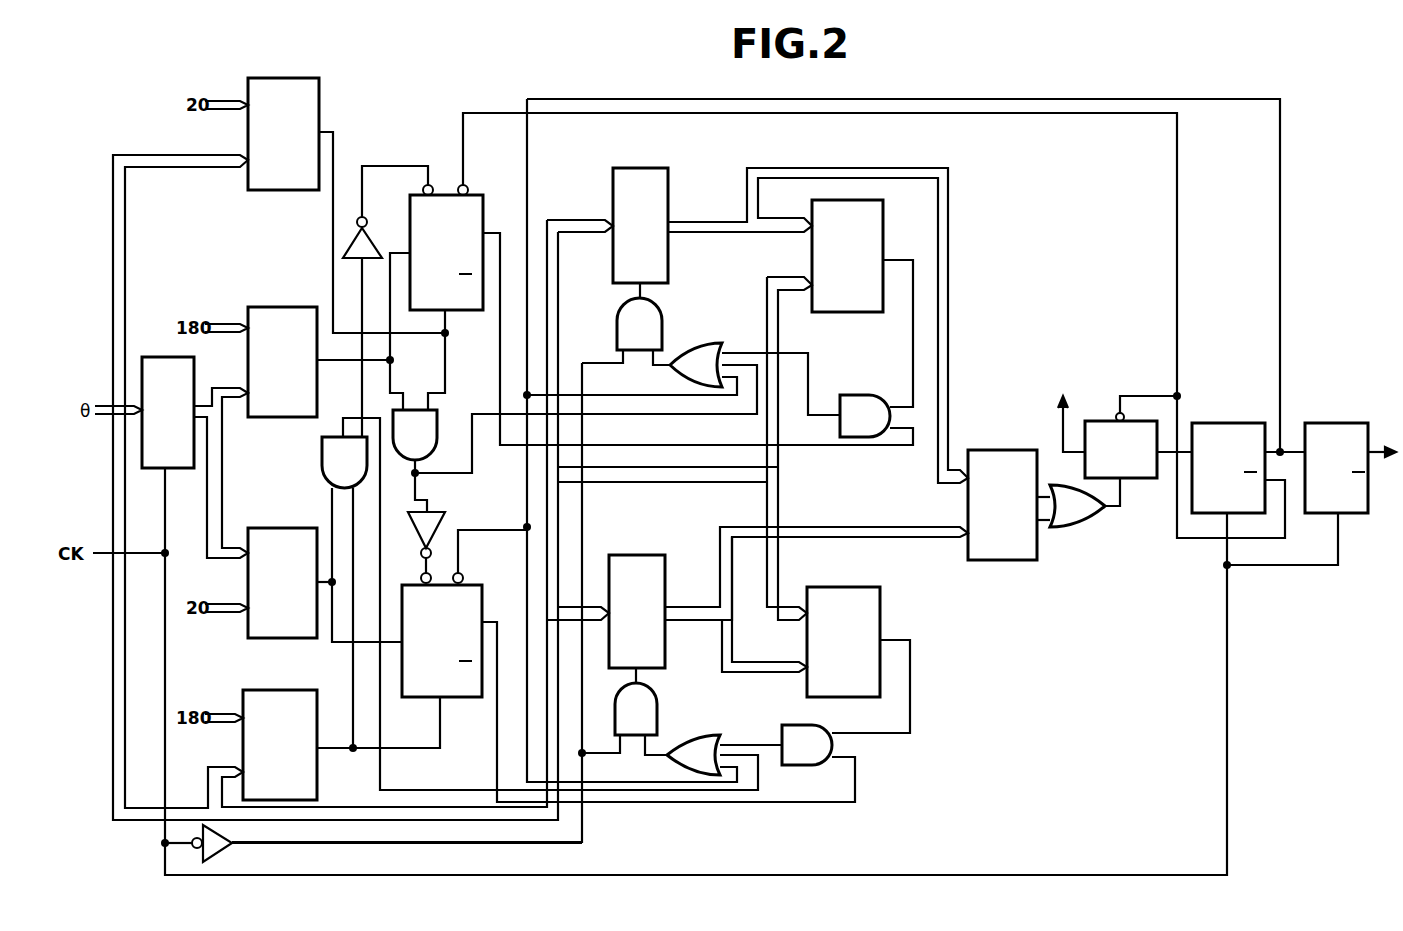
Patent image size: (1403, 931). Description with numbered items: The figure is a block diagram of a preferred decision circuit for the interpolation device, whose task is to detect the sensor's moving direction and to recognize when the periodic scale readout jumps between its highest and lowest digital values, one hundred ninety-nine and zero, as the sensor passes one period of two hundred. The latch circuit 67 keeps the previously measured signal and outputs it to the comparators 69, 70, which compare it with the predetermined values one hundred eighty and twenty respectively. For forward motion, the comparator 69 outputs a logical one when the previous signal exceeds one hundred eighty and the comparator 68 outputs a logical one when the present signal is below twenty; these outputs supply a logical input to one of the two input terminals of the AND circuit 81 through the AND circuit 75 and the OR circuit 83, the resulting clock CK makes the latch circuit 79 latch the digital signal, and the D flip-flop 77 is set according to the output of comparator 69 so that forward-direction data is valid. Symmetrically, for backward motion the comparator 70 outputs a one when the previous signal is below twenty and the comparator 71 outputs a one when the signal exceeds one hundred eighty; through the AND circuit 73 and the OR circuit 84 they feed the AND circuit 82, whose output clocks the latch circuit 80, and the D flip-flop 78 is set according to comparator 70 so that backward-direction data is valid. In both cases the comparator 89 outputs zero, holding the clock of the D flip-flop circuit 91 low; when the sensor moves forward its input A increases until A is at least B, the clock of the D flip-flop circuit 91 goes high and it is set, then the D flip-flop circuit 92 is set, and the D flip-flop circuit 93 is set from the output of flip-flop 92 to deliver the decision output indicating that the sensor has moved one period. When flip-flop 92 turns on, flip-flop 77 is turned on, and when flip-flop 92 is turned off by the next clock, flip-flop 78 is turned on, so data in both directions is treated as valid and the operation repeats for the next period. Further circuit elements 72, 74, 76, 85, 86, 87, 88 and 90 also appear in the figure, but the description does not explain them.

The latch circuit 67 is at (165, 357).
The comparator 68 is at (320, 98).
The comparator 69 is at (283, 307).
The comparator 70 is at (270, 528).
The comparator 71 is at (276, 690).
The inverter 72 is at (229, 850).
The AND circuit 73 is at (326, 442).
The inverter 74 is at (368, 228).
The AND circuit 75 is at (437, 420).
The inverter 76 is at (440, 525).
The D flip-flop 77 is at (476, 192).
The D flip-flop 78 is at (476, 594).
The latch circuit 79 is at (640, 168).
The latch circuit 80 is at (640, 555).
The AND circuit 81 is at (620, 308).
The AND circuit 82 is at (657, 698).
The OR circuit 83 is at (704, 343).
The OR circuit 84 is at (700, 740).
The AND gate 85 is at (862, 395).
The AND gate 86 is at (792, 725).
The comparator 87 is at (870, 218).
The comparator 88 is at (882, 612).
The comparator 89 is at (1004, 450).
The OR gate 90 is at (1080, 530).
The D flip-flop circuit 91 is at (1104, 420).
The D flip-flop circuit 92 is at (1232, 423).
The D flip-flop circuit 93 is at (1334, 423).